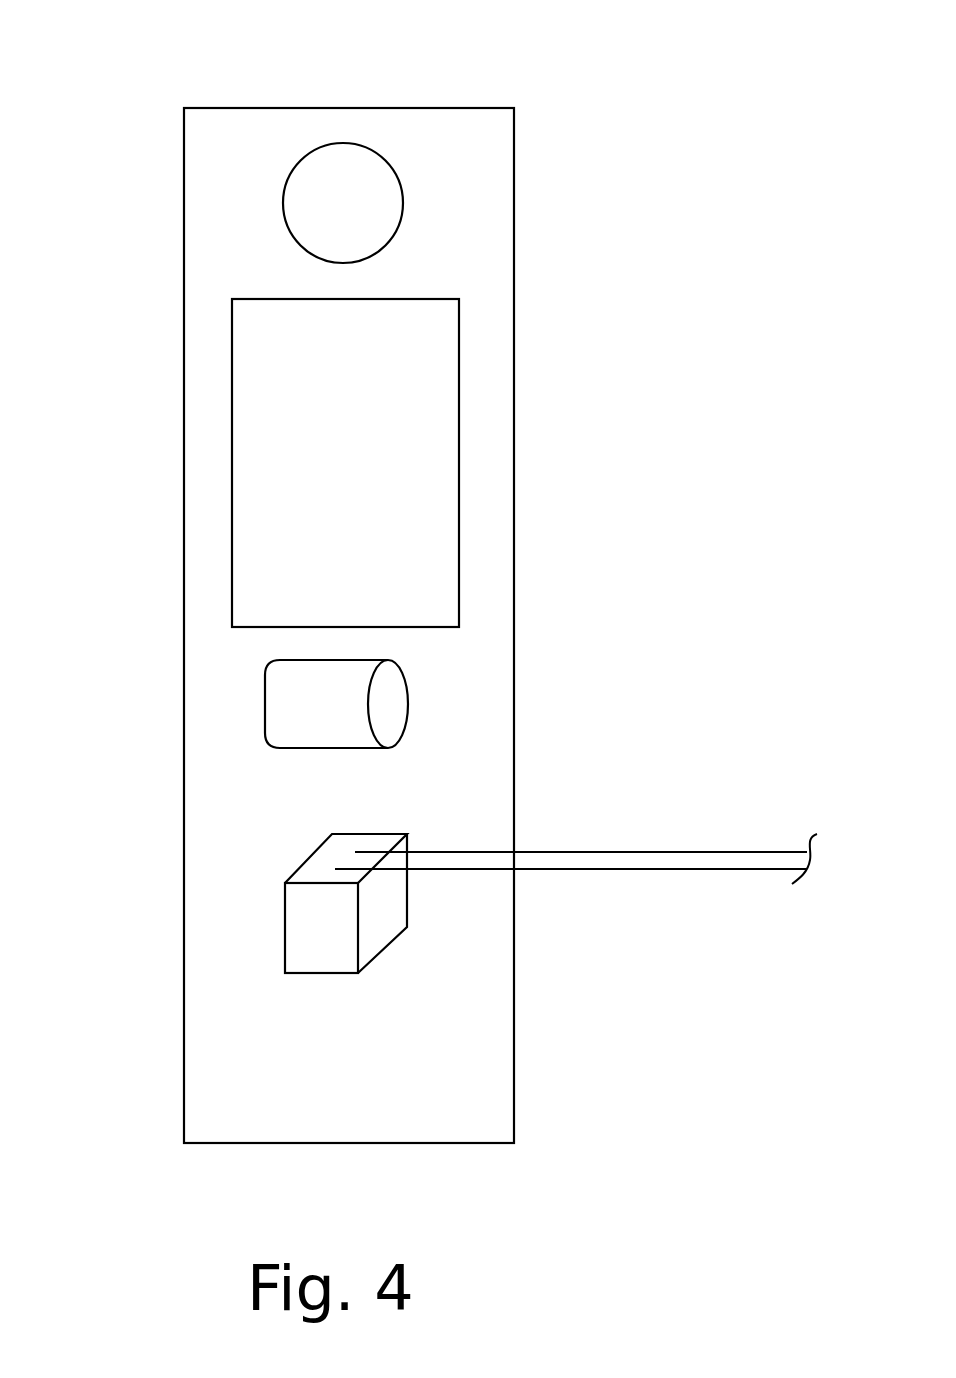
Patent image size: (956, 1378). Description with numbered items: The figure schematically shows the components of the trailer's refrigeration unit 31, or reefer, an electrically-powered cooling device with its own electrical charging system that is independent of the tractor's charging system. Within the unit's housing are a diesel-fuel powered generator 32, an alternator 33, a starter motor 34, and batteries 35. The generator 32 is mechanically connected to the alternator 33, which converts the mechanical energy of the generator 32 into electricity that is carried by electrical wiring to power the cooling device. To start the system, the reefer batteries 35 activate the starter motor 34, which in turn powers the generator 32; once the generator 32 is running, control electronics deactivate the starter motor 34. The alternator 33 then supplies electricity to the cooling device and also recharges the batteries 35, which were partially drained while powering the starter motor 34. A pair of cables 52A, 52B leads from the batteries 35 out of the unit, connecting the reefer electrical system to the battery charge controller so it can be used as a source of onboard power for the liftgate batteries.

The refrigeration unit 31 is at (599, 145).
The diesel-fuel powered generator 32 is at (237, 498).
The alternator 33 is at (290, 237).
The starter motor 34 is at (263, 722).
The batteries 35 is at (283, 930).
The cable 52A is at (738, 851).
The cable 52B is at (693, 870).